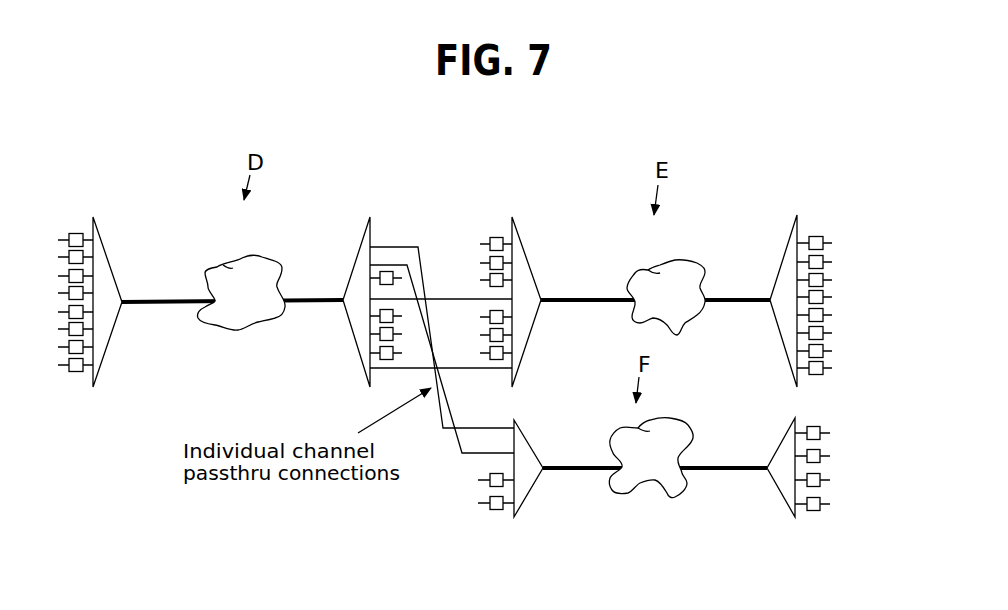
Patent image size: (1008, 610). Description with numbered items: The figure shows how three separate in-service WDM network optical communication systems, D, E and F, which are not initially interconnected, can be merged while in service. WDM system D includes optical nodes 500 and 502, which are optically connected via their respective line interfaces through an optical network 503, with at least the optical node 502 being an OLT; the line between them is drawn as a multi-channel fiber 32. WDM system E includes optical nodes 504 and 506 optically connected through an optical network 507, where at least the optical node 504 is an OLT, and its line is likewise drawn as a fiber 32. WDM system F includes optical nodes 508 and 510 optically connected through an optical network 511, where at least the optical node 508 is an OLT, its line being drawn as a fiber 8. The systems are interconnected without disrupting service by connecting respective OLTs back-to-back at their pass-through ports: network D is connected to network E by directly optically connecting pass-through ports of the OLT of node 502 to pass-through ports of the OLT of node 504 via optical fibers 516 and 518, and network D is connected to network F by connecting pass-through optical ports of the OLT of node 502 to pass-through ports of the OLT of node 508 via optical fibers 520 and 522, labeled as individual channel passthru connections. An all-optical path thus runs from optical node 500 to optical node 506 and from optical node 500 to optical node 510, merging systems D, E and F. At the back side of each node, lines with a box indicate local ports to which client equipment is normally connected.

The optical node 500 is at (100, 230).
The multi-channel optical fiber 32 is at (162, 318).
The optical network 503 is at (242, 262).
The optical node 502 is at (365, 232).
The optical fiber 520 is at (398, 247).
The optical fiber 522 is at (453, 437).
The optical fiber 516 is at (447, 298).
The optical fiber 518 is at (462, 352).
The optical node 504 is at (520, 255).
The optical network 507 is at (673, 260).
The optical node 506 is at (792, 237).
The optical node 508 is at (523, 500).
The optical fiber 8 is at (585, 488).
The optical network 511 is at (672, 420).
The optical node 510 is at (782, 485).